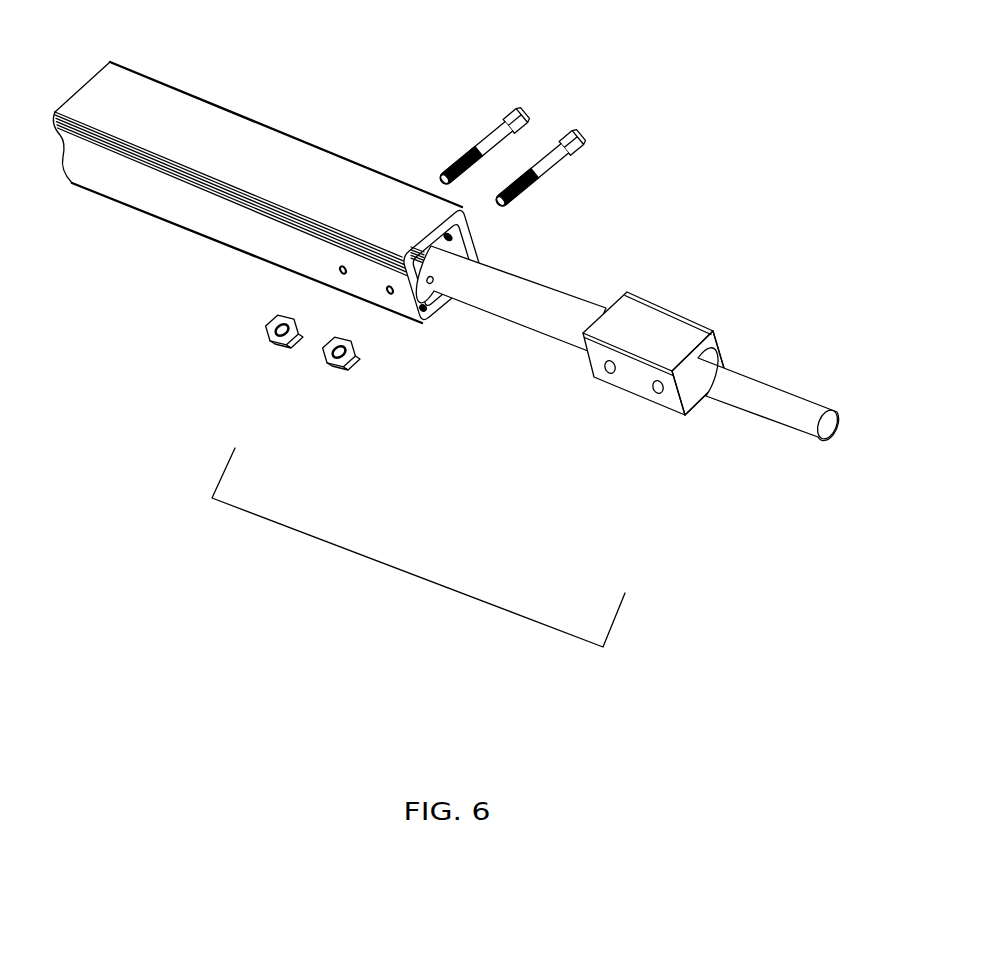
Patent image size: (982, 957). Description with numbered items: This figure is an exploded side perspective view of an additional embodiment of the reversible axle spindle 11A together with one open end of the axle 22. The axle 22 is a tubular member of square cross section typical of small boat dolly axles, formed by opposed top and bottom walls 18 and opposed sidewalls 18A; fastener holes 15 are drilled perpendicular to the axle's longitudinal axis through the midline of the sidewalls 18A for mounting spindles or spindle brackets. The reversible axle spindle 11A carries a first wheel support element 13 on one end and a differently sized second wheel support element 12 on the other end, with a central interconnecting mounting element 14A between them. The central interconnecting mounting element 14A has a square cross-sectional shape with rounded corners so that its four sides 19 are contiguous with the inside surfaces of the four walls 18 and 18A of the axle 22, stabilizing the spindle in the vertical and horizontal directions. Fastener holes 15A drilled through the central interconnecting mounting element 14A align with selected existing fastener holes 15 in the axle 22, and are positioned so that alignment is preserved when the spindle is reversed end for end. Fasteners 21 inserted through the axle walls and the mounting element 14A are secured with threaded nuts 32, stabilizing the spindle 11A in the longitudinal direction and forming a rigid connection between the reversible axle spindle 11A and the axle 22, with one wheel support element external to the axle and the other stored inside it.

The axle 22 is at (284, 80).
The top and bottom walls 18 is at (344, 202).
The sidewalls 18A is at (466, 237).
The fastener holes 15 is at (341, 273).
The second wheel support element 12 is at (510, 287).
The reversible axle spindle 11A is at (636, 255).
The sides of central interconnecting mounting element 19 is at (650, 324).
The central interconnecting mounting element 14A is at (708, 352).
The fastener holes 15A is at (610, 373).
The first wheel support element 13 is at (765, 403).
The fasteners 21 is at (483, 138).
The threaded nuts 32 is at (322, 372).